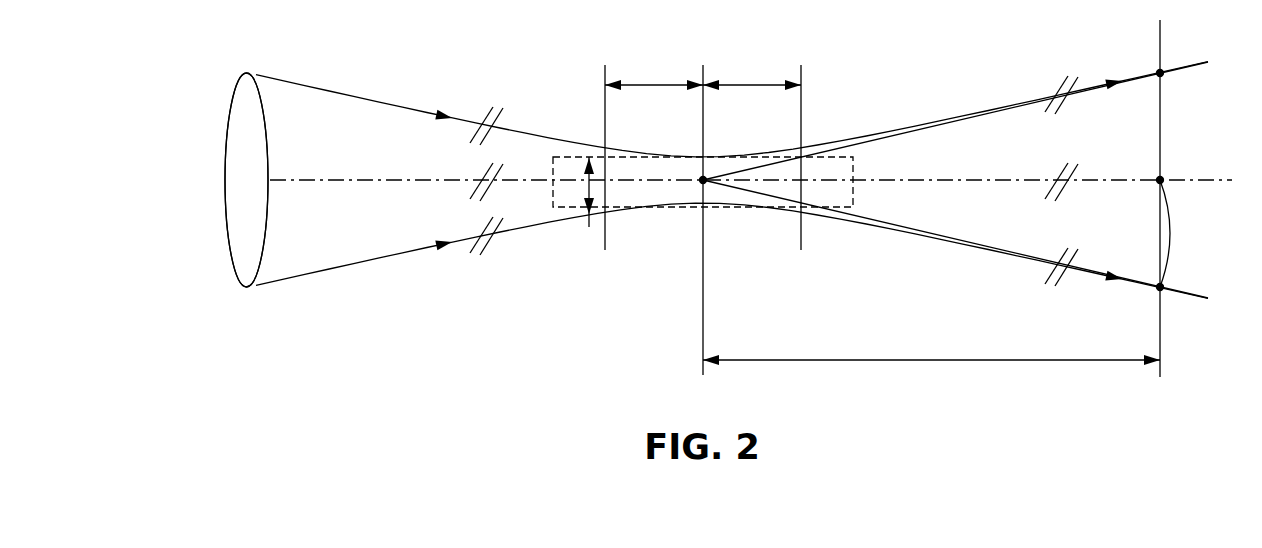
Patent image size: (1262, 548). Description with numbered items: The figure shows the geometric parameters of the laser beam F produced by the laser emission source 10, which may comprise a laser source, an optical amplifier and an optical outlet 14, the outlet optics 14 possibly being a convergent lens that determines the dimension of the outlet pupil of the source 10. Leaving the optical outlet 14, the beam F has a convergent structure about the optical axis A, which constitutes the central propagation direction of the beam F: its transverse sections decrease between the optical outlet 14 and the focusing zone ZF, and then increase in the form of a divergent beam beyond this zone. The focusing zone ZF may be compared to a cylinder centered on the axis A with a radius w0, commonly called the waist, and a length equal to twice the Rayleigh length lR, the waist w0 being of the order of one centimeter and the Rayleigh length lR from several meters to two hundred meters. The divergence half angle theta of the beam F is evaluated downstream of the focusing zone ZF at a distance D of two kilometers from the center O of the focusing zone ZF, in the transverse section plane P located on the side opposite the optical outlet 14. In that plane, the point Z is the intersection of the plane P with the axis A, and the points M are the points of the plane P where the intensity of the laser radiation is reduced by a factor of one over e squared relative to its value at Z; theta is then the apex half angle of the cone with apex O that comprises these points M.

The laser emission source 10 is at (209, 192).
The optical outlet 14 is at (236, 273).
The optical axis A is at (325, 178).
The laser beam F is at (388, 258).
The center of the focusing zone O is at (692, 170).
The points of the plane P M is at (1157, 71).
The point of intersection between the plane P and the axis A-A Z is at (1157, 178).
The transverse section plane P is at (1160, 392).
The focusing zone ZF is at (584, 153).
The waist radius w0 is at (589, 193).
The Rayleigh length lR is at (703, 208).
The divergence half angle theta is at (1172, 233).